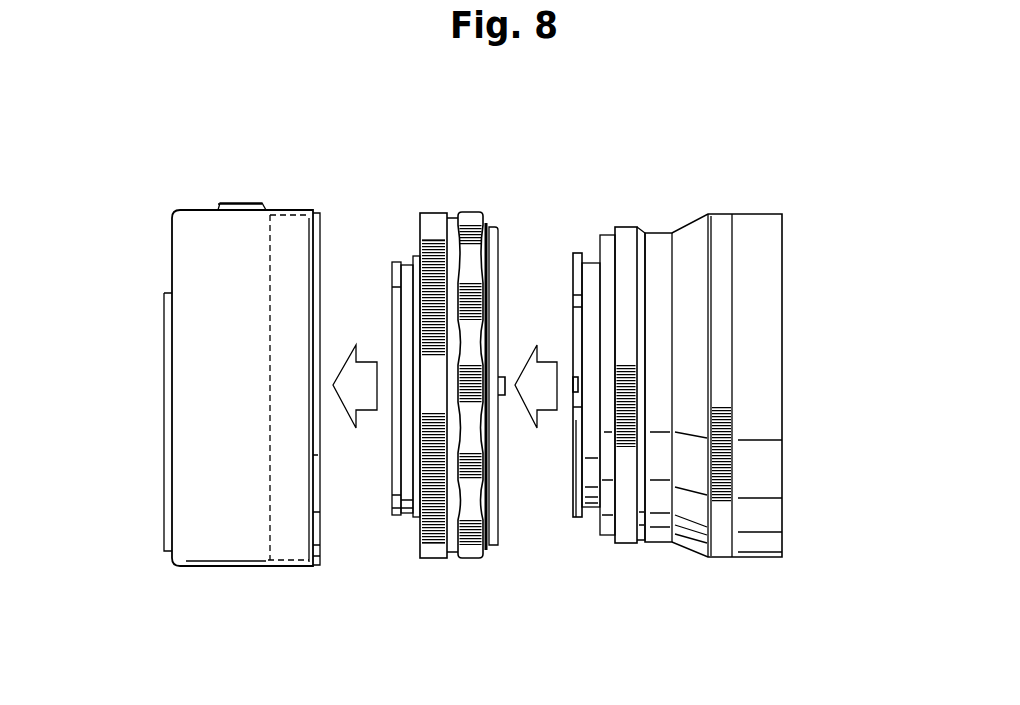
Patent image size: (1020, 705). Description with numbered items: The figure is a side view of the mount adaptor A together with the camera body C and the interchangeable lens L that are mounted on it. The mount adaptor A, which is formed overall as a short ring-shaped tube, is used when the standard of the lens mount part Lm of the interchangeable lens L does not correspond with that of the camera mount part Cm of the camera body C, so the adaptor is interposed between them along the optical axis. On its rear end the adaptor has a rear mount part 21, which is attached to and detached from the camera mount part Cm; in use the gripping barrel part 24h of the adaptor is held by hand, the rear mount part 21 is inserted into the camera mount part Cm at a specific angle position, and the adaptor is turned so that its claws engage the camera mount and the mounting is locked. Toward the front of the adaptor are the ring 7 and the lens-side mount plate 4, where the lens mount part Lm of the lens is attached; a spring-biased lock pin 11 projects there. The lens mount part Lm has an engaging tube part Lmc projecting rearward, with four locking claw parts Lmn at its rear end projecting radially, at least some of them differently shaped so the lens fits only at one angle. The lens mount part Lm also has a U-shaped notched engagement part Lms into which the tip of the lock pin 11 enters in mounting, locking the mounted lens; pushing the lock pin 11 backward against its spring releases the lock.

The camera body C is at (203, 205).
The camera mount part Cm is at (325, 274).
The mount adaptor A is at (425, 378).
The rear mount part 21 is at (396, 522).
The gripping barrel part 24h is at (434, 560).
The adapter ring 7 is at (472, 566).
The lens-side mount of adapter 4 is at (493, 218).
The lock pin 11 is at (505, 377).
The interchangeable lens L is at (651, 376).
The lens mount part Lm is at (551, 342).
The notched engagement part Lms is at (576, 393).
The locking claw parts Lmn is at (583, 283).
The engaging tube part Lmc is at (589, 520).